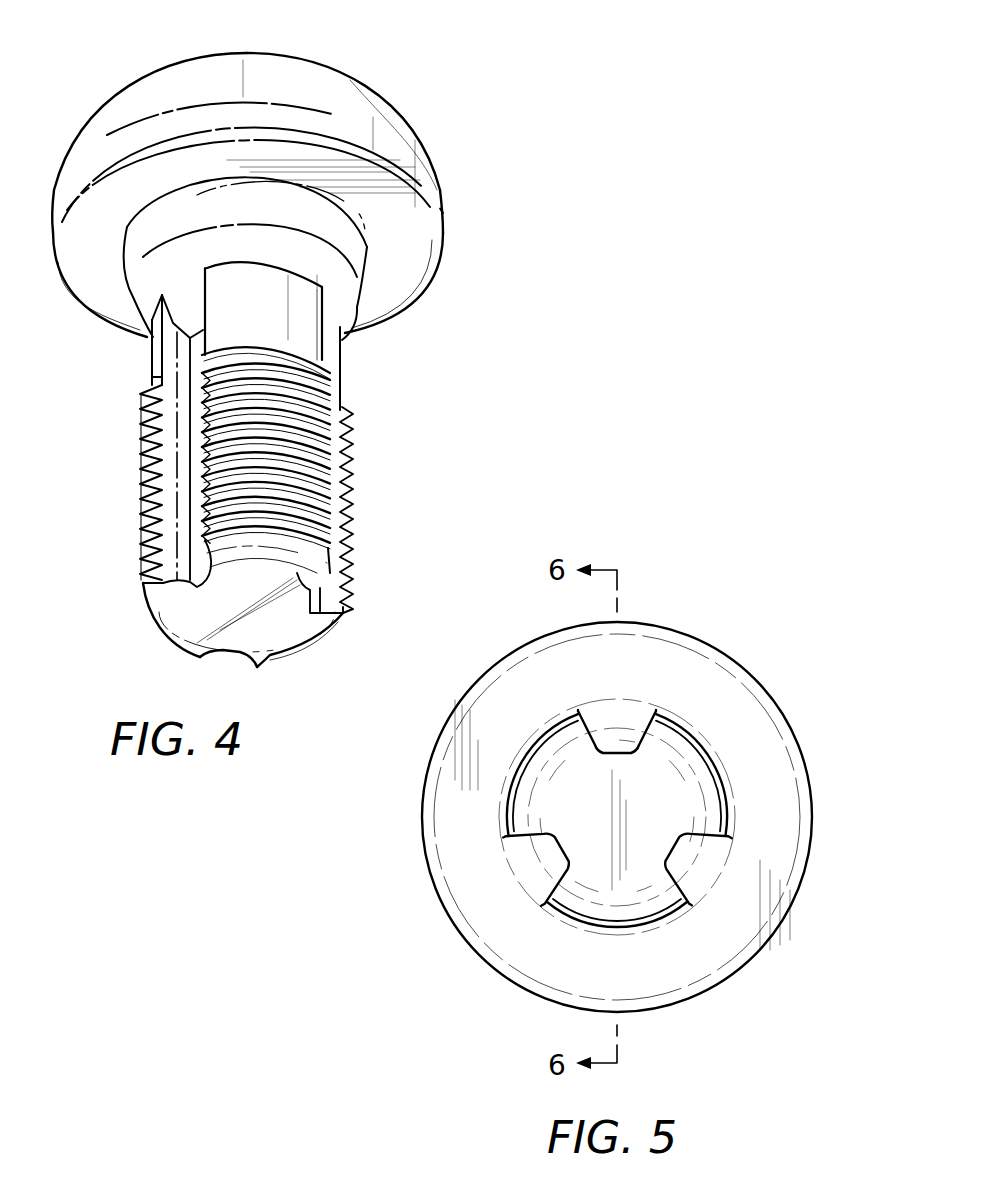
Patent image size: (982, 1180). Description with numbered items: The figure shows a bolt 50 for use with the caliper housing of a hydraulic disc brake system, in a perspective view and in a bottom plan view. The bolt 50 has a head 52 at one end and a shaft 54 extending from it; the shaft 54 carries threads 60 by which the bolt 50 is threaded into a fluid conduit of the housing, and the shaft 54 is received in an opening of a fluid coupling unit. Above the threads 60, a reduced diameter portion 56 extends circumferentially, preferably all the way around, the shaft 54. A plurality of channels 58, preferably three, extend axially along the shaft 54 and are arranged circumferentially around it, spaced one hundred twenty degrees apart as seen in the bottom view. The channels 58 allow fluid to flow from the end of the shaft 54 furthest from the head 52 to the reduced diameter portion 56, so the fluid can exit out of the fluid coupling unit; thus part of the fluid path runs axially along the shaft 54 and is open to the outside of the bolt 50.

In FIG. 4, the bolt 50 is at (541, 157).
In FIG. 5, the bolt 50 is at (725, 560).
In FIG. 4, the head 52 is at (193, 83).
In FIG. 5, the head 52 is at (487, 938).
In FIG. 4, the shaft 54 is at (399, 437).
In FIG. 5, the shaft 54 is at (572, 792).
In FIG. 4, the reduced diameter portion 56 is at (302, 317).
In FIG. 4, the channels 58 is at (340, 552).
In FIG. 5, the channels 58 is at (633, 720).
In FIG. 4, the threads 60 is at (143, 478).